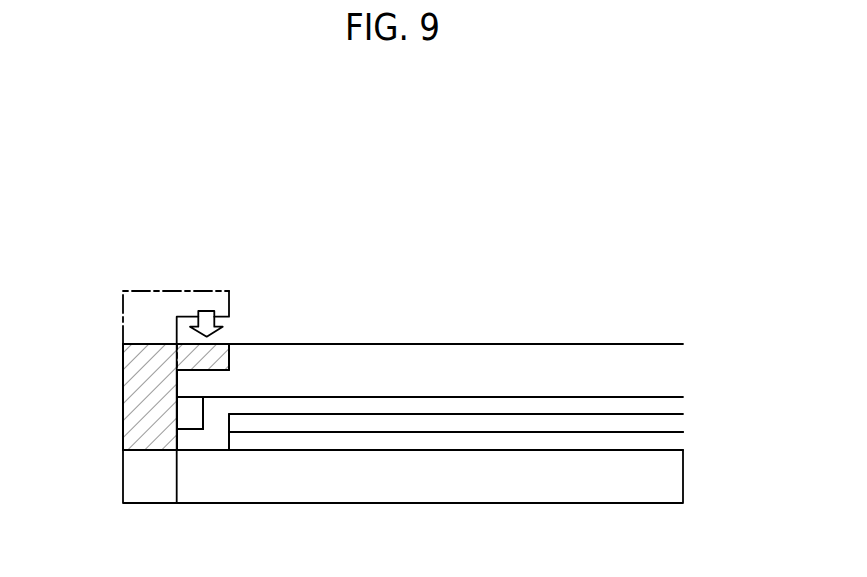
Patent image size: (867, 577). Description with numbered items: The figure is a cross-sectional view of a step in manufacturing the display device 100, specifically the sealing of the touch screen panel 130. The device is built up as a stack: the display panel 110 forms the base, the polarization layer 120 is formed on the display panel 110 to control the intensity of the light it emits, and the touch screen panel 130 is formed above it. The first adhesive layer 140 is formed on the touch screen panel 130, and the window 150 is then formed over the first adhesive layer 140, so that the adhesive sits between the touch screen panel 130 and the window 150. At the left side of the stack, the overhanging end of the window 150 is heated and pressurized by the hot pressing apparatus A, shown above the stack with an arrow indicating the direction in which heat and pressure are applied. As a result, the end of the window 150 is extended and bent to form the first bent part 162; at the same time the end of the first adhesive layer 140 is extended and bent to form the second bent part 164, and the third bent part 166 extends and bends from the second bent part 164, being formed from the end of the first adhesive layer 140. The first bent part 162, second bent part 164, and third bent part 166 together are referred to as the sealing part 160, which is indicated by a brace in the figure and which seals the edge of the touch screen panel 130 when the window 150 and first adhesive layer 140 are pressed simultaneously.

The display device 100 is at (408, 189).
The display panel 110 is at (670, 483).
The polarization layer 120 is at (670, 441).
The touch screen panel 130 is at (670, 420).
The first adhesive layer 140 is at (670, 405).
The window 150 is at (670, 353).
The sealing part 160 is at (62, 372).
The first bent part 162 is at (185, 406).
The second bent part 164 is at (215, 420).
The third bent part 166 is at (193, 443).
The hot pressing apparatus A is at (137, 353).